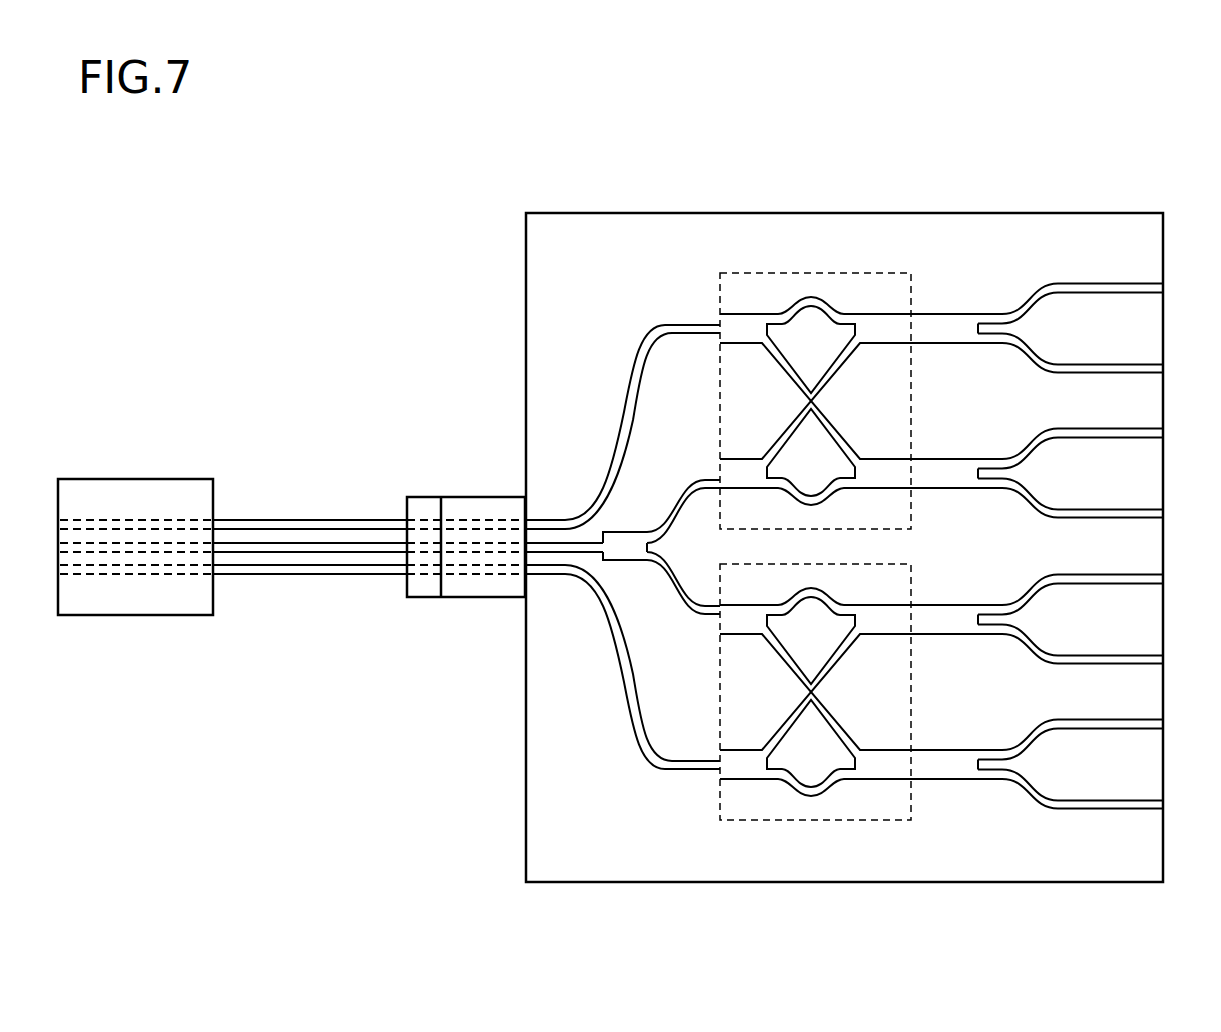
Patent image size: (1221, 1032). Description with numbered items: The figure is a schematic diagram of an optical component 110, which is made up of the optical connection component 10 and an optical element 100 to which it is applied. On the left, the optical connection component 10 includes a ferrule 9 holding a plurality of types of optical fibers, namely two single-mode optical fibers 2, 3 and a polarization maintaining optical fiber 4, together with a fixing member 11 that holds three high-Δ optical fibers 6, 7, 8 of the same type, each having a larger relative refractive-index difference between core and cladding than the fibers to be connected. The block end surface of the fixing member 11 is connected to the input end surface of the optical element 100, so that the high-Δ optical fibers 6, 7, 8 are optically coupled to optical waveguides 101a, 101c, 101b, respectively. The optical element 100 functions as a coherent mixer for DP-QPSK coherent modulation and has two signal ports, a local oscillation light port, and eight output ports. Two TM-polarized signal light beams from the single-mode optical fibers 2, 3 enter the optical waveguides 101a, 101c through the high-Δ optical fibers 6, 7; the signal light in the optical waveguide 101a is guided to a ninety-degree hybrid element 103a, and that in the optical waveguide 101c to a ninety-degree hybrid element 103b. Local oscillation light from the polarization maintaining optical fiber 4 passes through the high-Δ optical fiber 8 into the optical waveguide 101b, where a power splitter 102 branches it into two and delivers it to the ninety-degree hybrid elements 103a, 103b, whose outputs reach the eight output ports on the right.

The single-mode optical fiber 2 is at (300, 521).
The single-mode optical fiber 3 is at (316, 576).
The polarization maintaining optical fiber 4 is at (320, 550).
The high-Δ optical fiber 6 is at (465, 521).
The high-Δ optical fiber 7 is at (486, 576).
The high-Δ optical fiber 8 is at (488, 549).
The ferrule 9 is at (135, 479).
The optical connection component 10 is at (310, 482).
The fixing member 11 is at (466, 563).
The optical element 100 is at (862, 477).
The optical waveguide 101a is at (623, 373).
The optical waveguide 101b is at (563, 541).
The optical waveguide 101c is at (622, 722).
The power splitter 102 is at (640, 532).
The 90-degree hybrid element 103a is at (815, 272).
The 90-degree hybrid element 103b is at (816, 821).
The optical component 110 is at (862, 477).